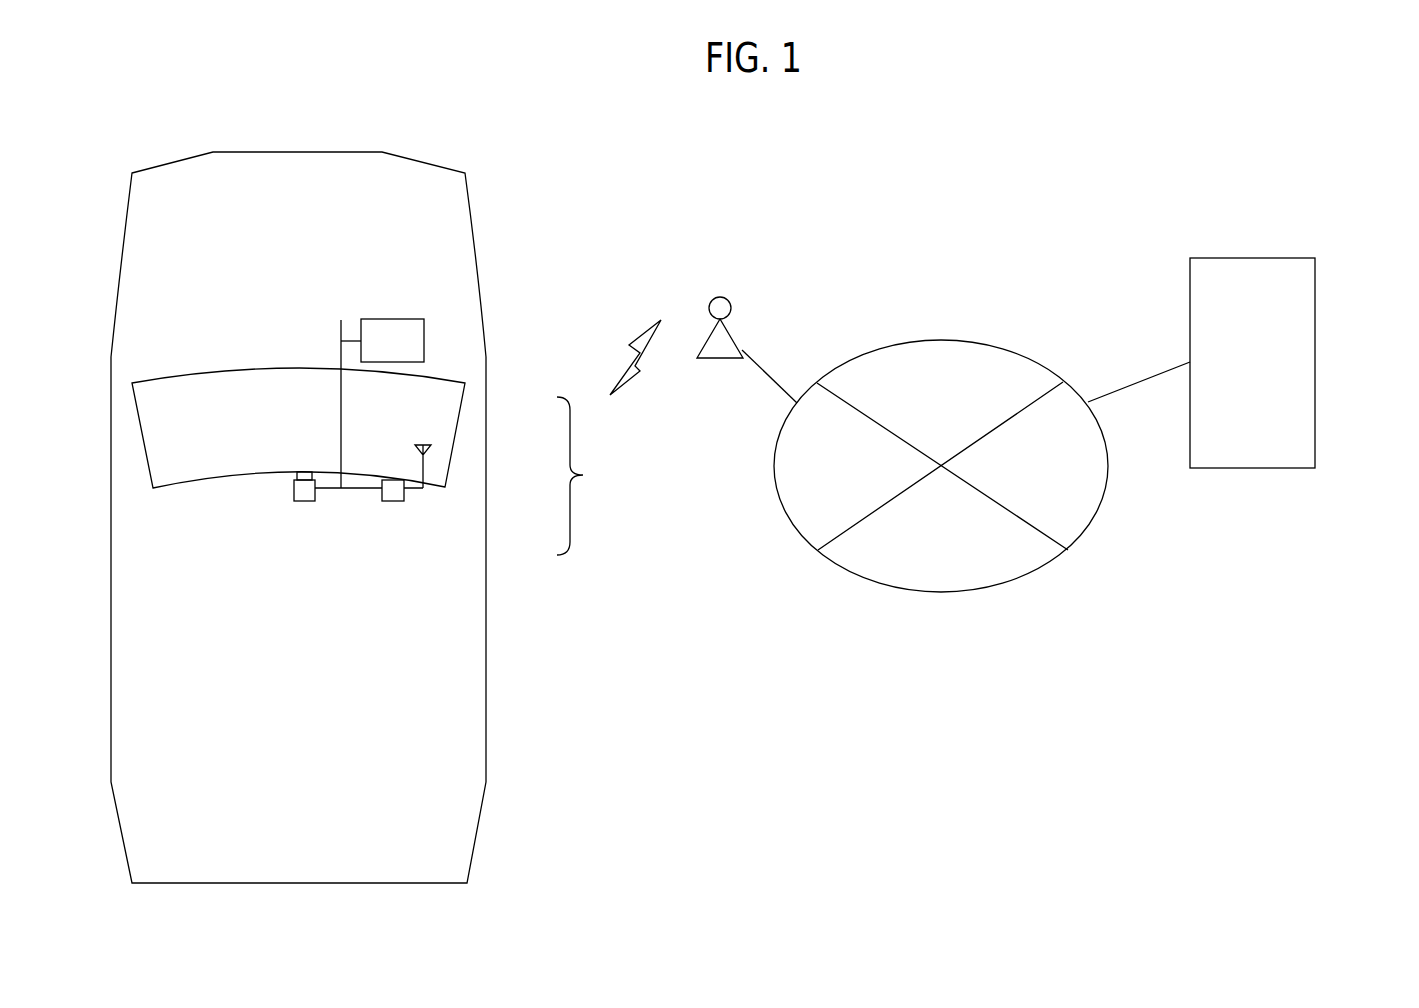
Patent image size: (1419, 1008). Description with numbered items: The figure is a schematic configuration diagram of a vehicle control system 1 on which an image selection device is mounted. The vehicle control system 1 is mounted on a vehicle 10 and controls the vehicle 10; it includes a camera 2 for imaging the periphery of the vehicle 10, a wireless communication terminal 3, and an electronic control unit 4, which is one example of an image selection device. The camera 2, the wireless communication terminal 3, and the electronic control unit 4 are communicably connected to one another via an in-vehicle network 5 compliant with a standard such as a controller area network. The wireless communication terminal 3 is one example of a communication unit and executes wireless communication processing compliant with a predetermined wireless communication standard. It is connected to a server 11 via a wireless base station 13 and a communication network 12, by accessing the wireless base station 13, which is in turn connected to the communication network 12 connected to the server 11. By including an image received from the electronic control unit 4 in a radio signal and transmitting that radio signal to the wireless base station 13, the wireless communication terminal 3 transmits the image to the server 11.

The vehicle control system 1 is at (581, 476).
The camera 2 is at (315, 497).
The wireless communication terminal 3 is at (404, 497).
The electronic control unit 4 is at (424, 341).
The in-vehicle network 5 is at (341, 422).
The vehicle 10 is at (486, 759).
The server 11 is at (1315, 427).
The communication network 12 is at (980, 592).
The wireless base station 13 is at (735, 333).